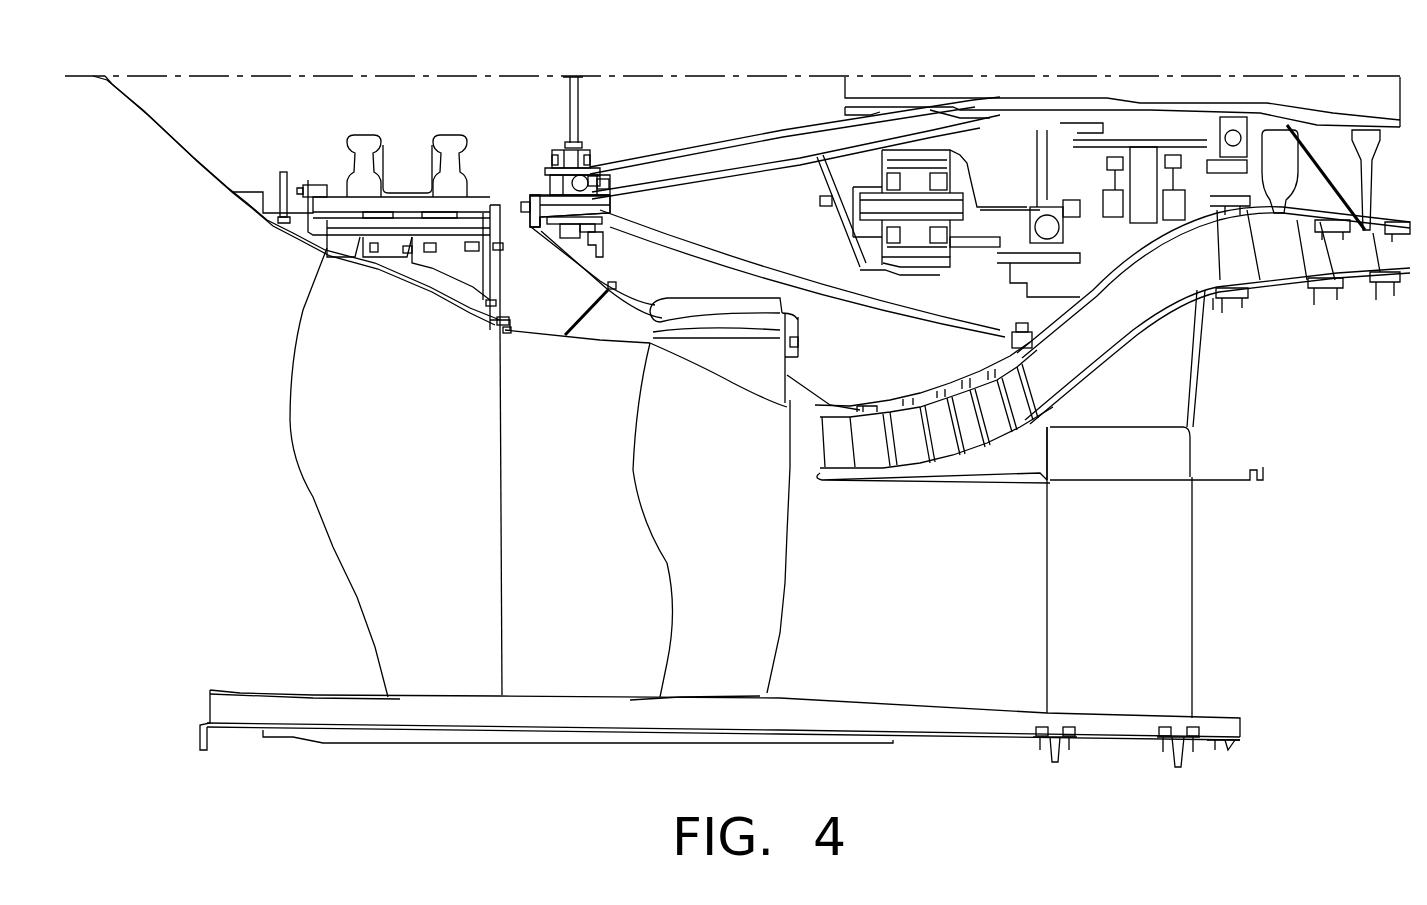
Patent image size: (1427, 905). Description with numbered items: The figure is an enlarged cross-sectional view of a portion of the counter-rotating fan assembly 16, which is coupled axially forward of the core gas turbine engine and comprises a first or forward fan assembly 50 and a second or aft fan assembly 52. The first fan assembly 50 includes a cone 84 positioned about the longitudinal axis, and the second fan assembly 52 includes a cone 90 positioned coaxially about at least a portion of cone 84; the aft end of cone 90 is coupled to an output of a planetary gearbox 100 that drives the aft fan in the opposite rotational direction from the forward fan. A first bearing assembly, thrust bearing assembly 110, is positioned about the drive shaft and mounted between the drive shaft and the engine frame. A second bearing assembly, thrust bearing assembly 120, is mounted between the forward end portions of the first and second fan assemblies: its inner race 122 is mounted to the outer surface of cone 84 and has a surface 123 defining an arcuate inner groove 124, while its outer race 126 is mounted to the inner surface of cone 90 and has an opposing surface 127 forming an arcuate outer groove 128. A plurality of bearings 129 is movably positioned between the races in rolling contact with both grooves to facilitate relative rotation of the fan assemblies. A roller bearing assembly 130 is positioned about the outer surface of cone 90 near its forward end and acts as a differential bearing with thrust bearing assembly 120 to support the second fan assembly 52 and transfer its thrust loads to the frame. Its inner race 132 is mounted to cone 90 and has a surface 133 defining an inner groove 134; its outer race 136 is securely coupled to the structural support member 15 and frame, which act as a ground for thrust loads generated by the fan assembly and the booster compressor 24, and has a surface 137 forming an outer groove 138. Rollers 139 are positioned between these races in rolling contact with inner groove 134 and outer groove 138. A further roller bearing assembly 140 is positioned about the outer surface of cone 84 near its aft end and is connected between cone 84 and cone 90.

The structural support member 15 is at (853, 297).
The counter-rotating fan assembly 16 is at (380, 757).
The booster compressor 24 is at (937, 502).
The first fan assembly 50 is at (294, 503).
The second fan assembly 52 is at (645, 582).
The cone 84 is at (757, 130).
The cone 90 is at (893, 130).
The gearbox 100 is at (1003, 148).
The thrust bearing assembly 110 is at (1100, 235).
The thrust bearing assembly 120 is at (530, 177).
The inner race 122 is at (605, 202).
The surface 123 is at (597, 184).
The inner groove 124 is at (543, 198).
The outer race 126 is at (576, 140).
The surface 127 is at (593, 187).
The outer groove 128 is at (570, 160).
The bearings 129 is at (594, 176).
The roller bearing assembly 130 is at (590, 222).
The inner race 132 is at (500, 325).
The surface 133 is at (491, 303).
The inner groove 134 is at (507, 330).
The outer race 136 is at (603, 229).
The surface 137 is at (577, 231).
The outer groove 138 is at (595, 244).
The rollers 139 is at (568, 282).
The roller bearing assembly 140 is at (980, 88).